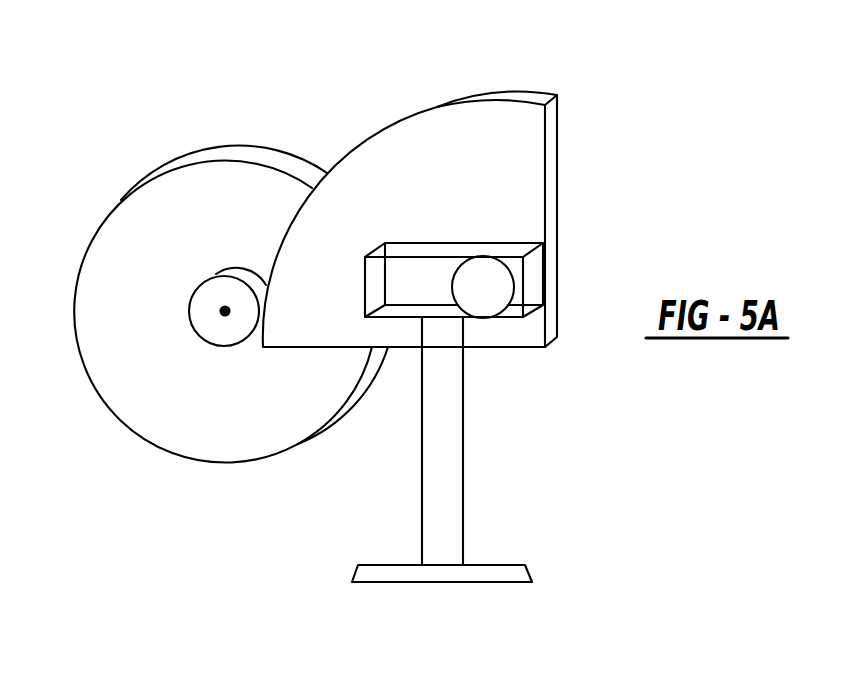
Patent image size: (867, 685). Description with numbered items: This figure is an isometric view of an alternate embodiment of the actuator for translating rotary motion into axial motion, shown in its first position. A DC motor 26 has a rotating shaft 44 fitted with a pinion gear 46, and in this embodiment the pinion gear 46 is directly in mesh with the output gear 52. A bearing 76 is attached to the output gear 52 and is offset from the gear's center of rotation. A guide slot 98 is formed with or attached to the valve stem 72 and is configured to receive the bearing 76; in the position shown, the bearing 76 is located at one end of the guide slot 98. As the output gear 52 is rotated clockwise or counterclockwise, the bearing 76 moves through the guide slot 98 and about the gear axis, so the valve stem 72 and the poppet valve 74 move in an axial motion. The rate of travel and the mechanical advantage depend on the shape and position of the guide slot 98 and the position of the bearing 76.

The DC motor 26 is at (88, 272).
The rotating shaft 44 is at (223, 310).
The pinion gear 46 is at (193, 322).
The output gear 52 is at (447, 133).
The guide slot 98 is at (492, 250).
The bearing 76 is at (482, 290).
The valve stem 72 is at (421, 497).
The poppet valve 74 is at (393, 582).